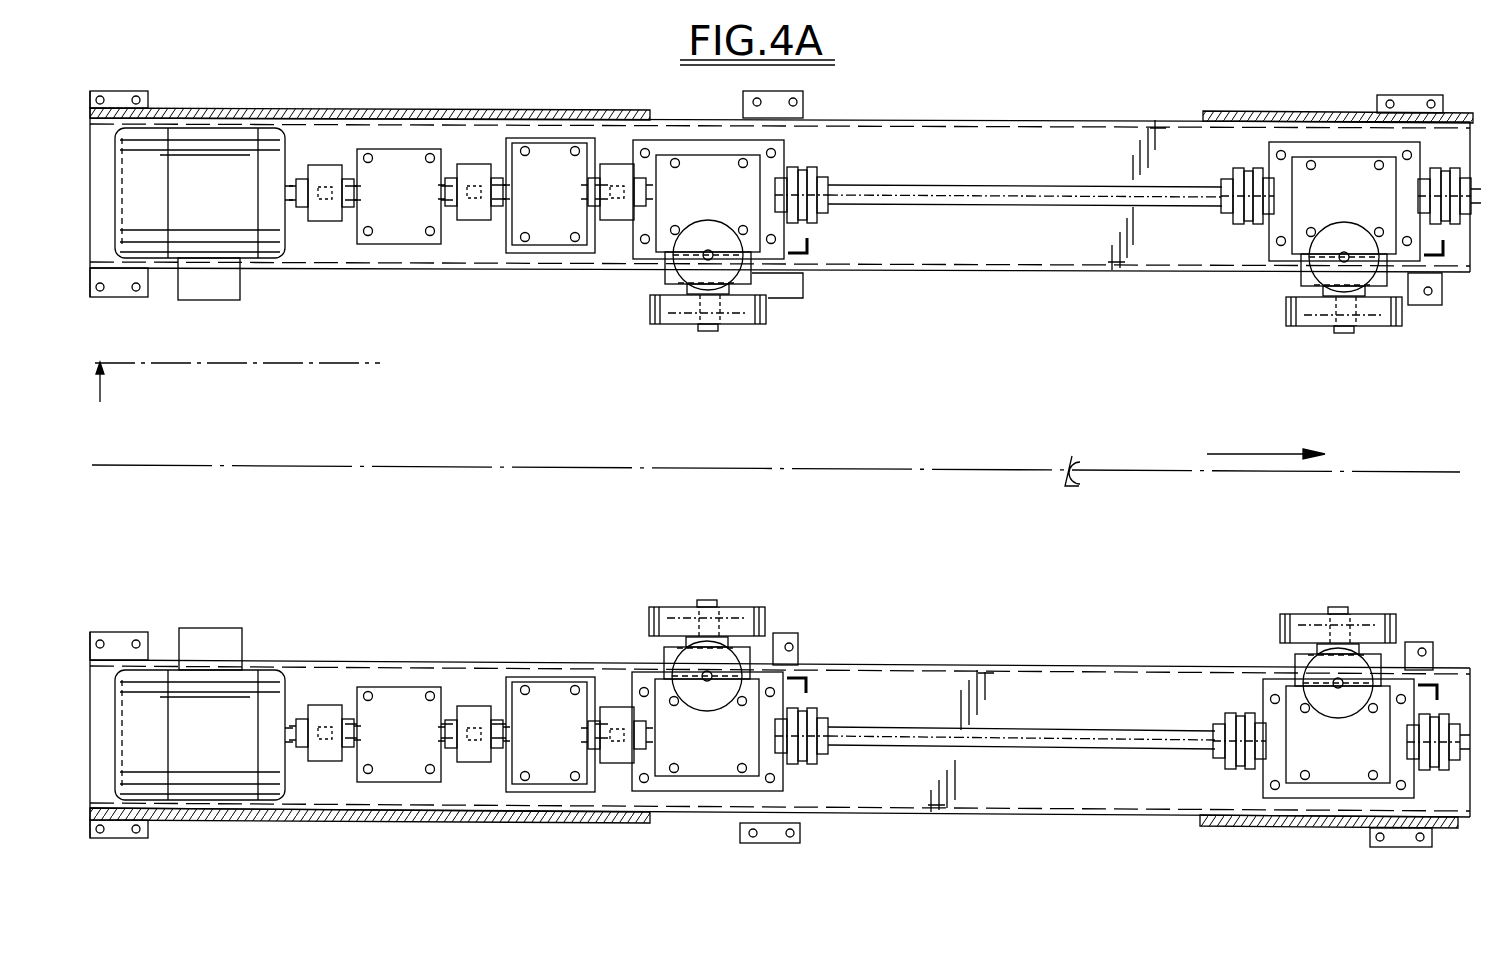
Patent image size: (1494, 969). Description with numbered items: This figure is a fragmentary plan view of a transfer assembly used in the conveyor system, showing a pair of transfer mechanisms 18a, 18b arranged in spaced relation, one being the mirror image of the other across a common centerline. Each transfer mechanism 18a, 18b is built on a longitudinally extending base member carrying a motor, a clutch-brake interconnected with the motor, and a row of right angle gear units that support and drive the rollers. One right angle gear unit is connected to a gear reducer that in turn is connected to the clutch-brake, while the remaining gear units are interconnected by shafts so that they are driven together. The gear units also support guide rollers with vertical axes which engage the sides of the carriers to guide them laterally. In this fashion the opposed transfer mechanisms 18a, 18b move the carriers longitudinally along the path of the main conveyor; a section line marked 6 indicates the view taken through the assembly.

The section line for FIG. 6 is at (237, 386).
The transfer mechanism 18a is at (972, 128).
The transfer mechanism 18b is at (1055, 678).